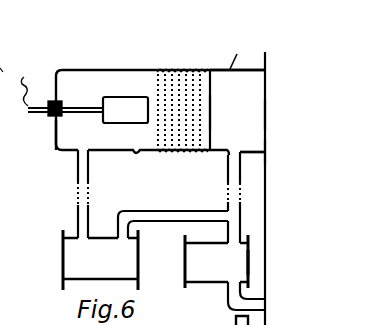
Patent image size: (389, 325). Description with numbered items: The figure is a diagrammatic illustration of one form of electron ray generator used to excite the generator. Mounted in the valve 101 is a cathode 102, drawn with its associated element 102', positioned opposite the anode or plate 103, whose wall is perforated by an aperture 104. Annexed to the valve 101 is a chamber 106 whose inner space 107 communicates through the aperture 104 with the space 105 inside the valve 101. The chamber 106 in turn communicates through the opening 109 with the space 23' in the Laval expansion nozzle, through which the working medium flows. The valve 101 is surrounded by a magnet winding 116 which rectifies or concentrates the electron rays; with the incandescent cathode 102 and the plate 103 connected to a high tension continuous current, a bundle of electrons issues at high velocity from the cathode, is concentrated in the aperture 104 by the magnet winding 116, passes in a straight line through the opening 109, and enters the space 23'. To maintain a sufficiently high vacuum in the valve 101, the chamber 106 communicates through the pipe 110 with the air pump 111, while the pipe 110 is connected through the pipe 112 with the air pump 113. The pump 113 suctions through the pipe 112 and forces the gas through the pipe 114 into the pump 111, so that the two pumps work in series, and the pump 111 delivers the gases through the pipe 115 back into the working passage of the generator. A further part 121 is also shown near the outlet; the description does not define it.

The valve 101 is at (137, 152).
The cathode 102 is at (61, 148).
The actuating block 102' is at (113, 87).
The anode or plate 103 is at (213, 80).
The aperture 104 is at (212, 113).
The space in the valve 105 is at (62, 122).
The chamber 106 is at (250, 144).
The inner space of the chamber 107 is at (258, 147).
The opening 109 is at (262, 114).
The pipe 110 is at (242, 180).
The air pump 111 is at (228, 262).
The pipe 112 is at (80, 170).
The air pump 113 is at (80, 252).
The pipe 114 is at (165, 212).
The pipe 115 is at (228, 287).
The magnet winding 116 is at (166, 69).
The bracket 121 is at (258, 322).
The space in the Laval expansion nozzle 23' is at (278, 262).